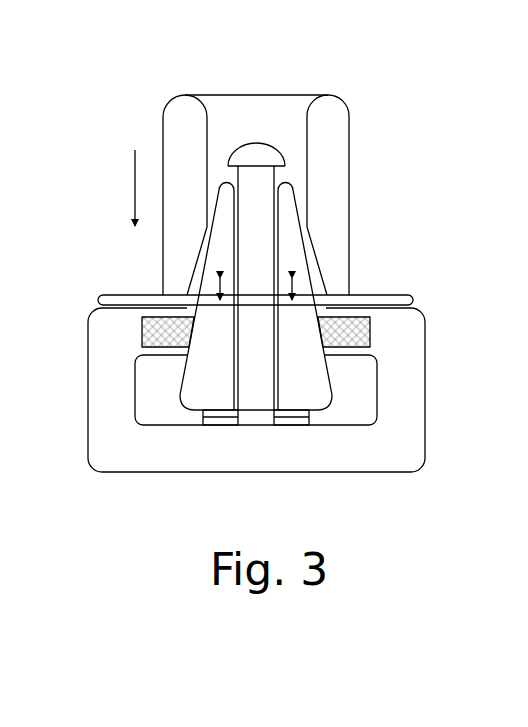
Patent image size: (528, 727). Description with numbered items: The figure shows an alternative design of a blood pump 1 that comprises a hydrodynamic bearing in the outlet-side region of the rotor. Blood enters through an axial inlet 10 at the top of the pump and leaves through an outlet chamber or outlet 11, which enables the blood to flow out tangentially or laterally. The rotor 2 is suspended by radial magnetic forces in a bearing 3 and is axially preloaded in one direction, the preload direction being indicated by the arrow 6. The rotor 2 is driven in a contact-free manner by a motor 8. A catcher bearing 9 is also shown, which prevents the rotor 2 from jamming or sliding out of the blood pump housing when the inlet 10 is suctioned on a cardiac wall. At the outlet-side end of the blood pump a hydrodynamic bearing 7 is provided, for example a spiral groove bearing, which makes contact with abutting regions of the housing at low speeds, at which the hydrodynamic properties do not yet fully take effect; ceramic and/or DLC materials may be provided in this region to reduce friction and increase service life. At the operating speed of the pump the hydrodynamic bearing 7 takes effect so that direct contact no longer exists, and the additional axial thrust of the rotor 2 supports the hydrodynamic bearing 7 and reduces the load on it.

The gripping device 1 is at (446, 168).
The rotor 2 is at (306, 288).
The bearing 3 is at (362, 325).
The direction of actuation 6 is at (135, 172).
The hydrodynamic bearing 7 is at (287, 417).
The motor 8 is at (274, 288).
The catcher bearing 9 is at (266, 149).
The axial inlet 10 is at (250, 118).
The outlet 11 is at (367, 400).